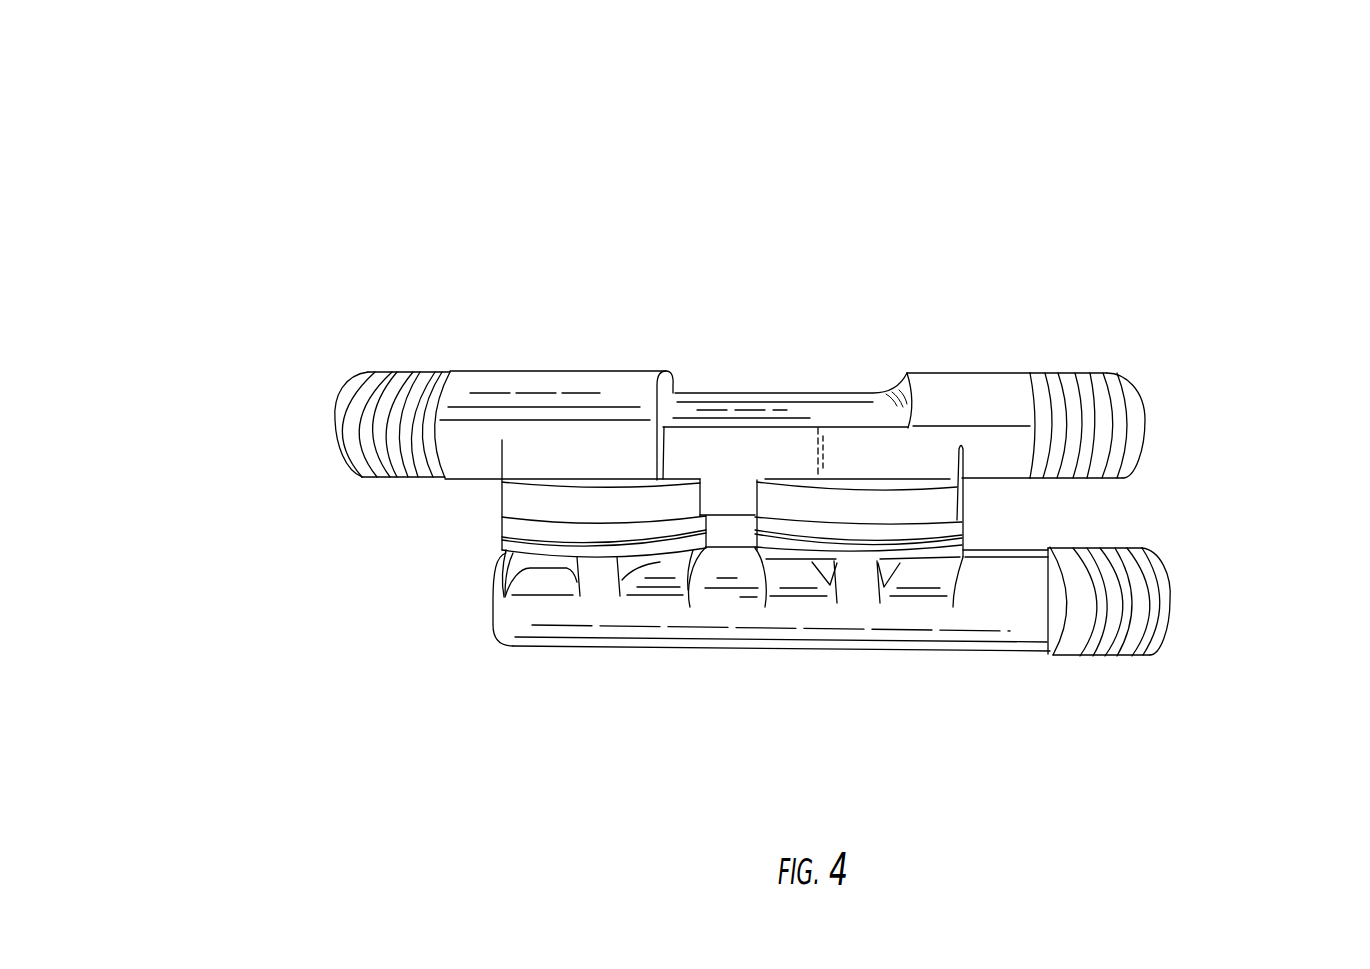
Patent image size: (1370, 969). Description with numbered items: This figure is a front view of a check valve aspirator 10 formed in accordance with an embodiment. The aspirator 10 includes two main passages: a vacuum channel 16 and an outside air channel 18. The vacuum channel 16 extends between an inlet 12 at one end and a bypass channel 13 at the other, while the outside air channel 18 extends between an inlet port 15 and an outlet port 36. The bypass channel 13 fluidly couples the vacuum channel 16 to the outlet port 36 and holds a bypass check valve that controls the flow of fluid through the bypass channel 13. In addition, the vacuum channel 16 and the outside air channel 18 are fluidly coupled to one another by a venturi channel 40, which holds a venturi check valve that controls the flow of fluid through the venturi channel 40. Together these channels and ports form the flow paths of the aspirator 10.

The aspirator 10 is at (1037, 130).
The inlet 12 is at (1208, 587).
The bypass channel 13 is at (510, 523).
The inlet port 15 is at (1143, 402).
The vacuum channel 16 is at (1168, 635).
The outside air channel 18 is at (318, 363).
The outlet port 36 is at (328, 402).
The venturi channel 40 is at (975, 520).